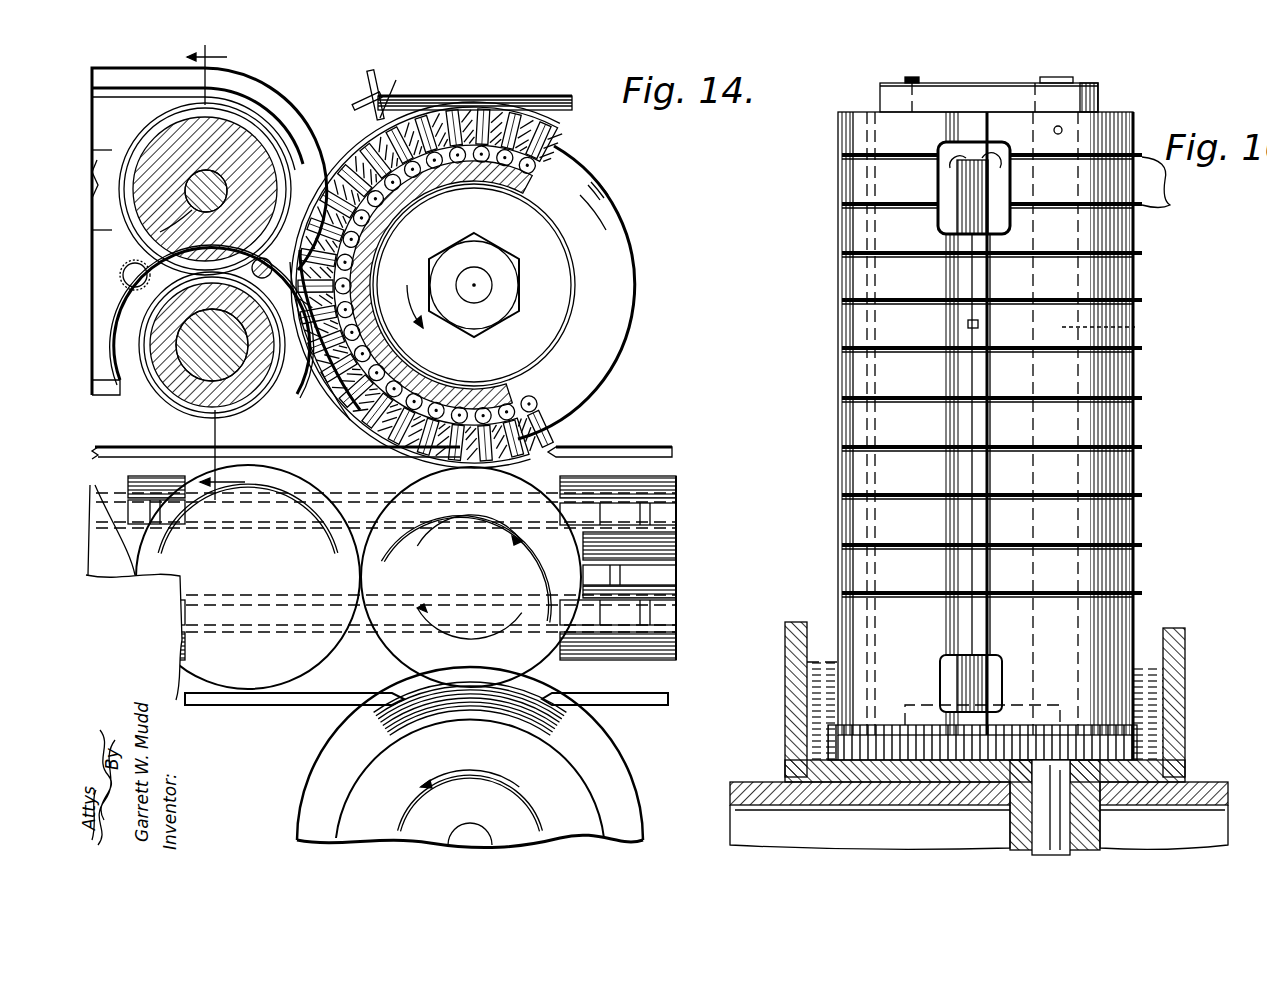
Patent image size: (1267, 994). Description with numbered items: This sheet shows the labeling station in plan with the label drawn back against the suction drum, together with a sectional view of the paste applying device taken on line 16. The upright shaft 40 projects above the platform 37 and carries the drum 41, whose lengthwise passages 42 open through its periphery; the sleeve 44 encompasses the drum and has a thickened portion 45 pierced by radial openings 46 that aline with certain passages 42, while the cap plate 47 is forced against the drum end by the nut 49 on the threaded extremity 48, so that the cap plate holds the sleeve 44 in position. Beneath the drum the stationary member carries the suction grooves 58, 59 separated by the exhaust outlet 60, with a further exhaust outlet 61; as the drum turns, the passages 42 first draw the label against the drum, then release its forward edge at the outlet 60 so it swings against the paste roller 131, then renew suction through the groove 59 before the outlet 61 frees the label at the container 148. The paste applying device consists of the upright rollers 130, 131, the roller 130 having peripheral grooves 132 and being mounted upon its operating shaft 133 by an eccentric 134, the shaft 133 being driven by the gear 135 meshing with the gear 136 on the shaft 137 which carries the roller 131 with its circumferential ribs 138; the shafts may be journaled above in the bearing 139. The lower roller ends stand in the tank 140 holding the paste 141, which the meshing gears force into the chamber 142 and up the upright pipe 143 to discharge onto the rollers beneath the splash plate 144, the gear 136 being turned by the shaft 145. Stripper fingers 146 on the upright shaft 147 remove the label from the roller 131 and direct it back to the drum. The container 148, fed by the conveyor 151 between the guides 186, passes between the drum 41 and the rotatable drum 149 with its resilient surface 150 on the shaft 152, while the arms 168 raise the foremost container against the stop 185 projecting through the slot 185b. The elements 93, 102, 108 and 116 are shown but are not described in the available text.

In FIG. 14, the section line 16 is at (228, 272).
In FIG. 16, the platform 37 is at (735, 790).
In FIG. 14, the upright shaft 40 is at (528, 182).
In FIG. 14, the drum 41 is at (394, 252).
In FIG. 14, the passages 42 is at (490, 168).
In FIG. 14, the sleeve 44 is at (612, 198).
In FIG. 14, the thickened portion 45 is at (524, 433).
In FIG. 14, the radial openings 46 is at (358, 185).
In FIG. 14, the cap plate 47 is at (620, 300).
In FIG. 14, the threaded extremity 48 is at (492, 288).
In FIG. 14, the nut 49 is at (504, 278).
In FIG. 14, the suction groove 58 is at (431, 212).
In FIG. 14, the suction groove 59 is at (402, 335).
In FIG. 14, the exhaust outlet 60 is at (409, 290).
In FIG. 14, the exhaust outlet 61 is at (438, 382).
In FIG. 14, the guide plate 93 is at (312, 390).
In FIG. 14, the housing wall 102 is at (109, 176).
In FIG. 14, the lever arm 108 is at (384, 96).
In FIG. 14, the lever 116 is at (368, 100).
In FIG. 14, the upright roller 130 is at (150, 160).
In FIG. 16, the upright roller 130 is at (840, 142).
In FIG. 14, the upright roller 131 is at (204, 418).
In FIG. 16, the upright roller 131 is at (1122, 126).
In FIG. 14, the peripheral grooves 132 is at (200, 405).
In FIG. 16, the peripheral grooves 132 is at (838, 157).
In FIG. 14, the operating shaft 133 is at (185, 382).
In FIG. 16, the operating shaft 133 is at (912, 78).
In FIG. 14, the eccentric 134 is at (162, 350).
In FIG. 16, the eccentric 134 is at (868, 110).
In FIG. 16, the gear 135 is at (830, 746).
In FIG. 16, the gear 136 is at (1105, 740).
In FIG. 14, the shaft 137 is at (158, 236).
In FIG. 16, the shaft 137 is at (1070, 80).
In FIG. 14, the circumferential ribs 138 is at (168, 133).
In FIG. 16, the circumferential ribs 138 is at (1161, 182).
In FIG. 16, the bearing 139 is at (963, 92).
In FIG. 14, the tank 140 is at (115, 78).
In FIG. 16, the tank 140 is at (1180, 650).
In FIG. 16, the paste 141 is at (1170, 680).
In FIG. 16, the chamber 142 is at (940, 692).
In FIG. 14, the upright pipe 143 is at (135, 290).
In FIG. 16, the upright pipe 143 is at (985, 216).
In FIG. 16, the splash plate 144 is at (998, 120).
In FIG. 16, the shaft 145 is at (1035, 822).
In FIG. 14, the stripper fingers 146 is at (338, 422).
In FIG. 16, the stripper fingers 146 is at (926, 412).
In FIG. 14, the upright shaft 147 is at (282, 254).
In FIG. 16, the upright shaft 147 is at (982, 376).
In FIG. 14, the container 148 is at (358, 577).
In FIG. 14, the rotatable drum 149 is at (590, 800).
In FIG. 14, the resilient surface 150 is at (312, 756).
In FIG. 14, the conveyor 151 is at (674, 518).
In FIG. 14, the shaft 152 is at (472, 836).
In FIG. 14, the arms 168 is at (674, 488).
In FIG. 14, the stop 185 is at (622, 572).
In FIG. 14, the slot 185b is at (668, 580).
In FIG. 14, the guides 186 is at (272, 703).